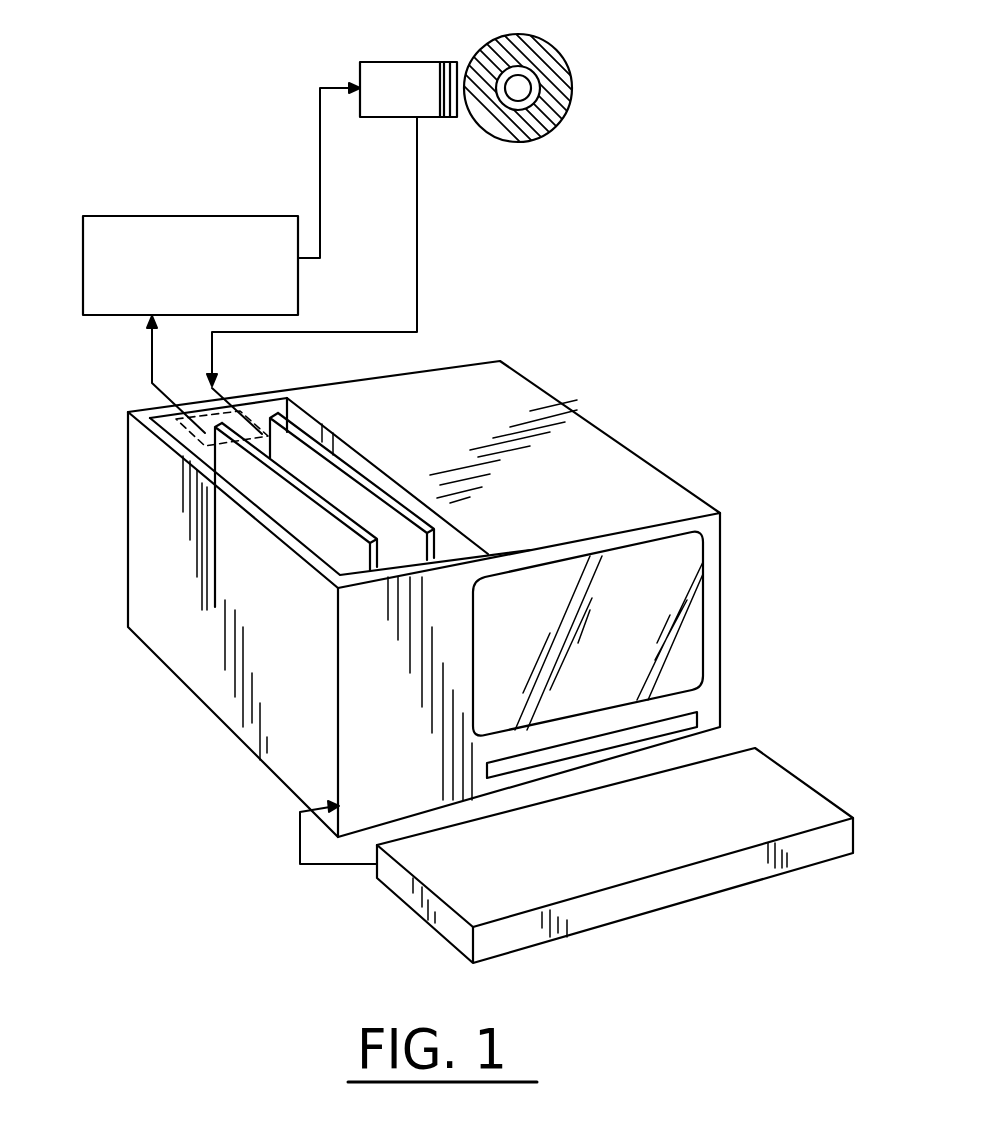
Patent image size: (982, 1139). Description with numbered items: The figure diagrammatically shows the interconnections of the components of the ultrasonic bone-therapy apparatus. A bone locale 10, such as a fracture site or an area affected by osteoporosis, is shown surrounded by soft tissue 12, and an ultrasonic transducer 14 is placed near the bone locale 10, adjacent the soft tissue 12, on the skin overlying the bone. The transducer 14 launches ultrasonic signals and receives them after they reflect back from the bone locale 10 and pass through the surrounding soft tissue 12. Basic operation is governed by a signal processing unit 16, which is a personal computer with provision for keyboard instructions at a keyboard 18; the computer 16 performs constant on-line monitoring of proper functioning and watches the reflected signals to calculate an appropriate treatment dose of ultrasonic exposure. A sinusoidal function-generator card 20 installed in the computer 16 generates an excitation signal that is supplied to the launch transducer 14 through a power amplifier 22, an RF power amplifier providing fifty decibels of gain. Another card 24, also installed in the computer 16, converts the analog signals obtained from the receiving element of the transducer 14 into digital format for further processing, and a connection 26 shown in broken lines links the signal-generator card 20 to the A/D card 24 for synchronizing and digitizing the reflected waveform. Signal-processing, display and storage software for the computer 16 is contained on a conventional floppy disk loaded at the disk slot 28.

The bone locale 10 is at (531, 140).
The soft tissue 12 is at (567, 67).
The ultrasonic transducer 14 is at (398, 72).
The signal processing unit 16 is at (147, 581).
The keyboard 18 is at (797, 788).
The sinusoidal function-generator card 20 is at (317, 537).
The power amplifier means 22 is at (205, 213).
The A/D card 24 is at (360, 497).
The connector slot 26 is at (172, 450).
The floppy disk loading location 28 is at (688, 722).